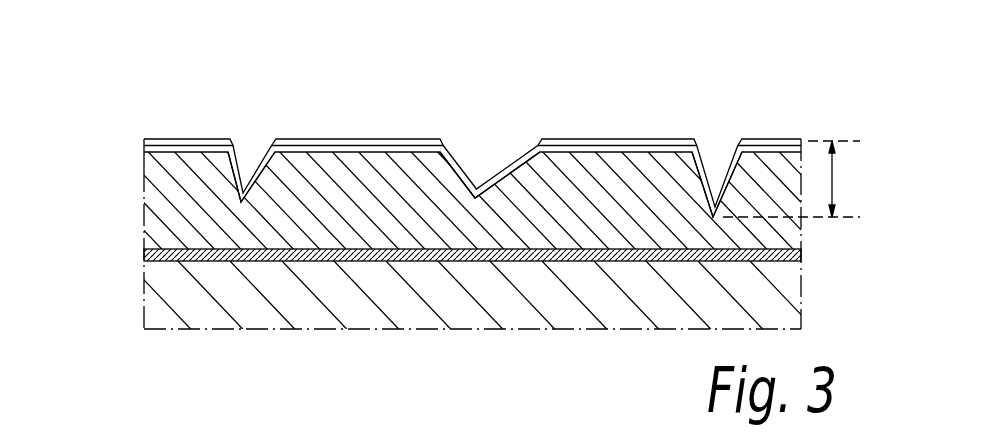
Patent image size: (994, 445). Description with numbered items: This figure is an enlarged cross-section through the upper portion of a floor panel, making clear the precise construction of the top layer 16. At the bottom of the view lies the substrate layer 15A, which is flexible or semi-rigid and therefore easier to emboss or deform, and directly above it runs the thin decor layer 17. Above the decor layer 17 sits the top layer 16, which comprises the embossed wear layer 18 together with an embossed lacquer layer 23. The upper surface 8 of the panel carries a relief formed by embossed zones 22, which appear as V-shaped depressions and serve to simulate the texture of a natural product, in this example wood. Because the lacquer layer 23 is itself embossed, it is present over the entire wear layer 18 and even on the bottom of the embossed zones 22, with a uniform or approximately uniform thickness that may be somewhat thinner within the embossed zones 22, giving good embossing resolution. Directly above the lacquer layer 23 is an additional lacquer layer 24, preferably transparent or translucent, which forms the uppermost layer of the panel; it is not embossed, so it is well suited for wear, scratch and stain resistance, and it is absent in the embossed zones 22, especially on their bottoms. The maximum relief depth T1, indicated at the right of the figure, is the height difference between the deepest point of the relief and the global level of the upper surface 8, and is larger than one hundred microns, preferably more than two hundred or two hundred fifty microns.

The top layer 16 is at (128, 205).
The upper surface 8 is at (472, 118).
The embossed wear layer 18 is at (349, 220).
The embossed zones 22 is at (245, 170).
The lacquer layer 23 is at (592, 152).
The additional lacquer layer 24 is at (647, 143).
The decor layer 17 is at (442, 261).
The substrate layer 15A is at (242, 290).
The maximum relief depth T1 is at (832, 182).